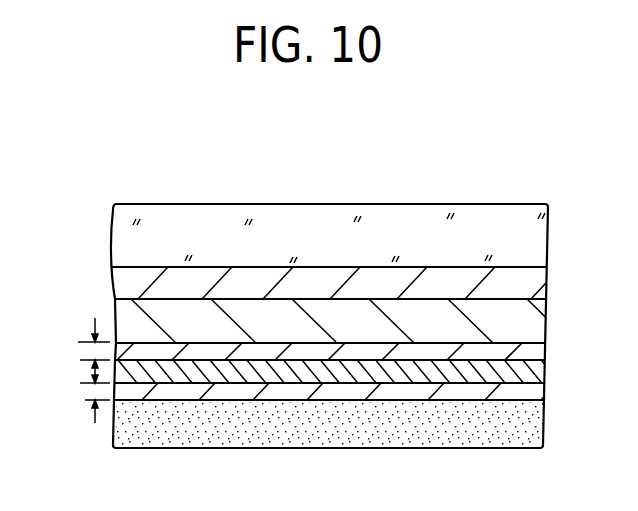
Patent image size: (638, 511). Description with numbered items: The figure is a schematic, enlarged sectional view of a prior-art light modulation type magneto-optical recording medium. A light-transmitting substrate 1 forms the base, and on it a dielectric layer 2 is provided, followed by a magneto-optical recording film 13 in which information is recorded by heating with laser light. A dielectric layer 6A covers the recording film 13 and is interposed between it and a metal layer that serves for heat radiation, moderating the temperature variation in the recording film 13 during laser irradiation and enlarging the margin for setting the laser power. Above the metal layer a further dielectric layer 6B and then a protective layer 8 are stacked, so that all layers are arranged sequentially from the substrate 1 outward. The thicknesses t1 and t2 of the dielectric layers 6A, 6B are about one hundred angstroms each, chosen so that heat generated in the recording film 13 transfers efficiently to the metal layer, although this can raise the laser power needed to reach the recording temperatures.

The light-transmitting substrate 1 is at (535, 235).
The dielectric layer 2 is at (528, 282).
The magneto-optical recording film 13 is at (528, 320).
The dielectric layer 6A is at (528, 350).
The dielectric layer 6B is at (523, 390).
The protective layer 8 is at (522, 427).
The thickness of dielectric layer 6A t1 is at (80, 349).
The thickness of dielectric layer 6B t2 is at (82, 391).